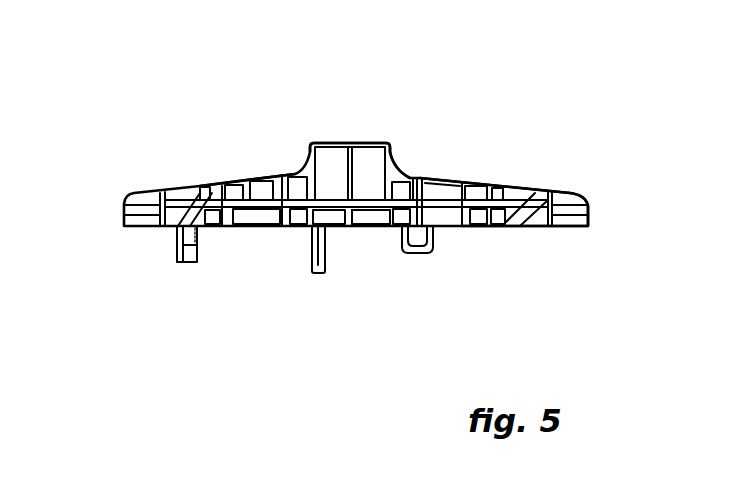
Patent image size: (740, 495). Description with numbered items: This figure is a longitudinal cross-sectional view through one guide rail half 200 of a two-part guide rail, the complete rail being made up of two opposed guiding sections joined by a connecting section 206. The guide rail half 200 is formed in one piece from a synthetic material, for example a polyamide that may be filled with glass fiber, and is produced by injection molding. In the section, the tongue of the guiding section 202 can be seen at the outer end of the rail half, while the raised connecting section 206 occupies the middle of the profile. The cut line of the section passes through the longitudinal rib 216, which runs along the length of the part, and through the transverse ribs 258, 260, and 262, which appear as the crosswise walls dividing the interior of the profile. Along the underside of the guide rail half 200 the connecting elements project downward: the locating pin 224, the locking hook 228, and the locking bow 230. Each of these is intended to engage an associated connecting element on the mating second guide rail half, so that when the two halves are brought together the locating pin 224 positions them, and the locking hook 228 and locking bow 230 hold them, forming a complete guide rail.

The guide rail half 200 is at (236, 231).
The guiding section 202 is at (520, 197).
The connecting section 206 is at (330, 143).
The longitudinal rib 216 is at (368, 202).
The locating pin 224 is at (310, 252).
The locking hook 228 is at (176, 246).
The locking bow 230 is at (420, 255).
The transverse rib 258 is at (275, 185).
The transverse rib 260 is at (353, 178).
The transverse rib 262 is at (402, 178).